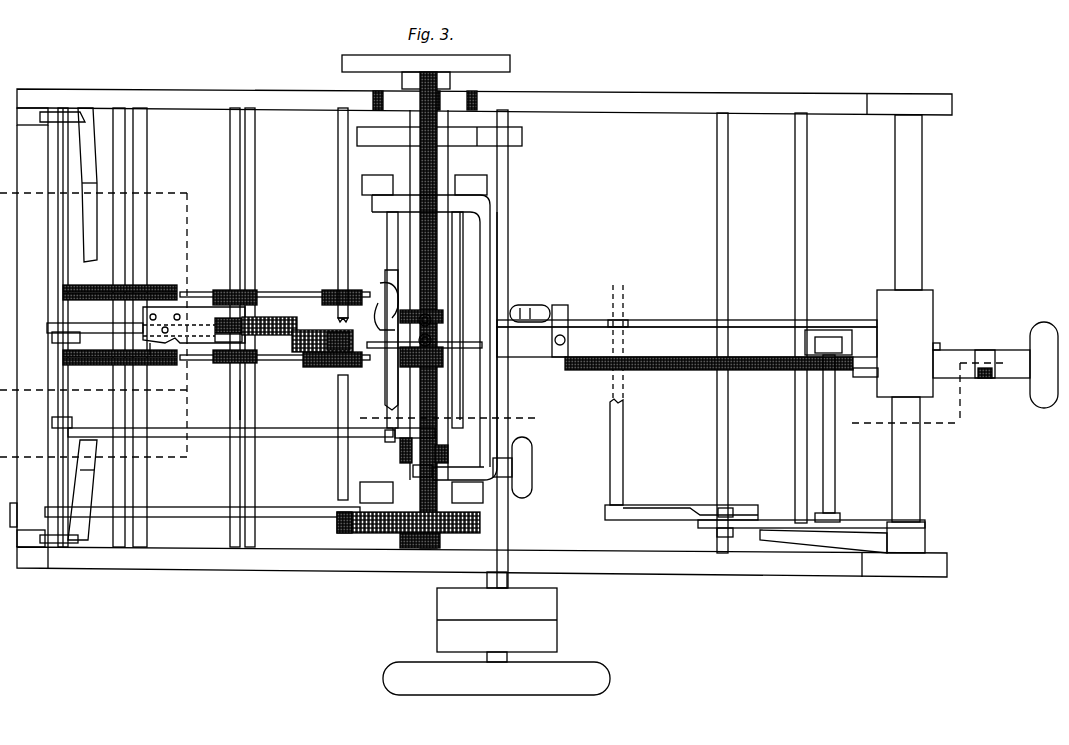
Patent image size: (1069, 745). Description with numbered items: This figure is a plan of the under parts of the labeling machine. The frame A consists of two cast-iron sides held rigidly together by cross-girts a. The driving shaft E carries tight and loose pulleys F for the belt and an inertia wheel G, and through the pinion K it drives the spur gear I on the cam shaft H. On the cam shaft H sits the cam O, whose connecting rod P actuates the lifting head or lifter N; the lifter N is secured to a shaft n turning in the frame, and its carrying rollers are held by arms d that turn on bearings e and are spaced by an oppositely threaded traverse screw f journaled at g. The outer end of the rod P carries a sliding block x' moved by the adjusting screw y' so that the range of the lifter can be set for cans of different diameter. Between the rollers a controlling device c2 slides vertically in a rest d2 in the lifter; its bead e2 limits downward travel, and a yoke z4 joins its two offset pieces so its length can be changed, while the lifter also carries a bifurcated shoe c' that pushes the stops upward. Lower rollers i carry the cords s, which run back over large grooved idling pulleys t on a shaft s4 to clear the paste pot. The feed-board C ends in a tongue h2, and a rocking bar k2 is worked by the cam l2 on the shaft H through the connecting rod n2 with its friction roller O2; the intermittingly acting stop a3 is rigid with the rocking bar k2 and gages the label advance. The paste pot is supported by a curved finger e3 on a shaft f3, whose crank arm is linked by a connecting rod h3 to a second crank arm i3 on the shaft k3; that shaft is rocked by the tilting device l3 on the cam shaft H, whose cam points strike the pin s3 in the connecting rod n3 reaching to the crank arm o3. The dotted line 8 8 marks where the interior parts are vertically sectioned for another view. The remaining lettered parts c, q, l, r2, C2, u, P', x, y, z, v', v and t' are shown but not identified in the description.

The frame A is at (484, 333).
The cross-girts a is at (140, 162).
The rocking bar k2 is at (46, 327).
The shaft k3 is at (54, 196).
The shaft s4 is at (118, 128).
The pawl c is at (82, 324).
The grooved idling pulleys t is at (120, 325).
The intermittingly acting stop a3 is at (92, 323).
The feed-board C is at (180, 307).
The tongue h2 is at (205, 316).
The connecting rod h3 is at (218, 343).
The pin q is at (181, 368).
The cords or bands s is at (292, 300).
The lower rollers i is at (287, 338).
The curved finger e3 is at (272, 322).
The cam O is at (330, 341).
The second crank arm i3 is at (52, 338).
The crank arm o3 is at (72, 425).
The shaft f3 is at (244, 395).
The connecting rod n3 is at (285, 432).
The connecting rod n2 is at (280, 510).
The post l is at (337, 466).
The plate r2 is at (508, 66).
The spur gear I is at (392, 112).
The pinion K is at (522, 138).
The cam shaft H is at (420, 157).
The arms d is at (423, 339).
The driving shaft E is at (505, 200).
The lifting head or lifter N is at (488, 282).
The bearings e is at (393, 256).
The arm C2 is at (380, 292).
The controlling device c2 is at (445, 296).
The bead e2 is at (424, 321).
The yoke or tie z4 is at (435, 321).
The rest or bearing d2 is at (450, 360).
The connecting rod P is at (379, 340).
The dotted section line 8 is at (683, 393).
The pin s3 is at (400, 445).
The tilting device l3 is at (450, 455).
The journal g is at (412, 470).
The oppositely threaded traverse screw f is at (512, 467).
The cam l2 is at (482, 522).
The friction roller O2 is at (338, 522).
The tight and loose pulleys F is at (497, 617).
The inertia wheel G is at (496, 678).
The bifurcated shoe c' is at (539, 320).
The rod u is at (623, 342).
The screw shaft P' is at (687, 357).
The shaft n is at (906, 334).
The block x is at (838, 341).
The block x' is at (944, 335).
The longitudinal adjusting screw y' is at (995, 365).
The rod y is at (838, 434).
The block z is at (838, 517).
The post v' is at (628, 452).
The lever v is at (681, 502).
The block t' is at (811, 518).